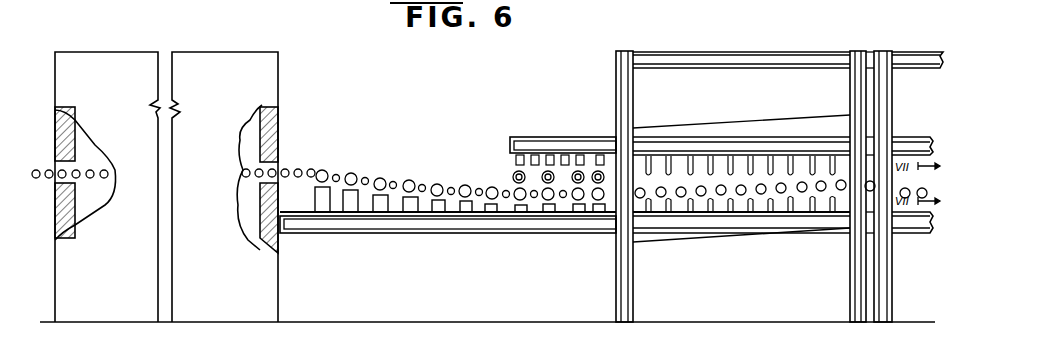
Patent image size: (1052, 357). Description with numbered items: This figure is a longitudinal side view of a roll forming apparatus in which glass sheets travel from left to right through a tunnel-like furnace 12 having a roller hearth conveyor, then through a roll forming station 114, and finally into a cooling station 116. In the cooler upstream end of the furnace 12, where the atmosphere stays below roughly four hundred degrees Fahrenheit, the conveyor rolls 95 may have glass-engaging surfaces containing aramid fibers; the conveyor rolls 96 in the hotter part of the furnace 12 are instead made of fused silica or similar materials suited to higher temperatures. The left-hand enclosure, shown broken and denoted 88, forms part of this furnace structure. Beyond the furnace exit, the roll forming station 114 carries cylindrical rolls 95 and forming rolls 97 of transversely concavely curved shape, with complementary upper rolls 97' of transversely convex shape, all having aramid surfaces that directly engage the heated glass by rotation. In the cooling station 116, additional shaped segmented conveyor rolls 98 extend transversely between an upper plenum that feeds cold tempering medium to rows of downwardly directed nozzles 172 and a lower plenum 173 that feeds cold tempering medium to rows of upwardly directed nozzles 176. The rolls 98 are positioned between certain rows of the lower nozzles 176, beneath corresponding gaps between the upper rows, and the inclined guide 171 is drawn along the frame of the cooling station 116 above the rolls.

The tunnel-like furnace 12 is at (243, 47).
The housing 88 is at (107, 187).
The conveyor rolls 95 is at (91, 178).
The conveyor rolls 96 is at (242, 172).
The forming rolls 97 is at (460, 169).
The upper rolls 97' is at (535, 169).
The shaped conveyor rolls 98 is at (720, 182).
The roll forming station 114 is at (338, 135).
The cooling station 116 is at (729, 45).
The upper guide rail 171 is at (807, 118).
The downwardly directed nozzles 172 is at (677, 166).
The lower plenum 173 is at (540, 240).
The upwardly directed nozzles 176 is at (722, 210).